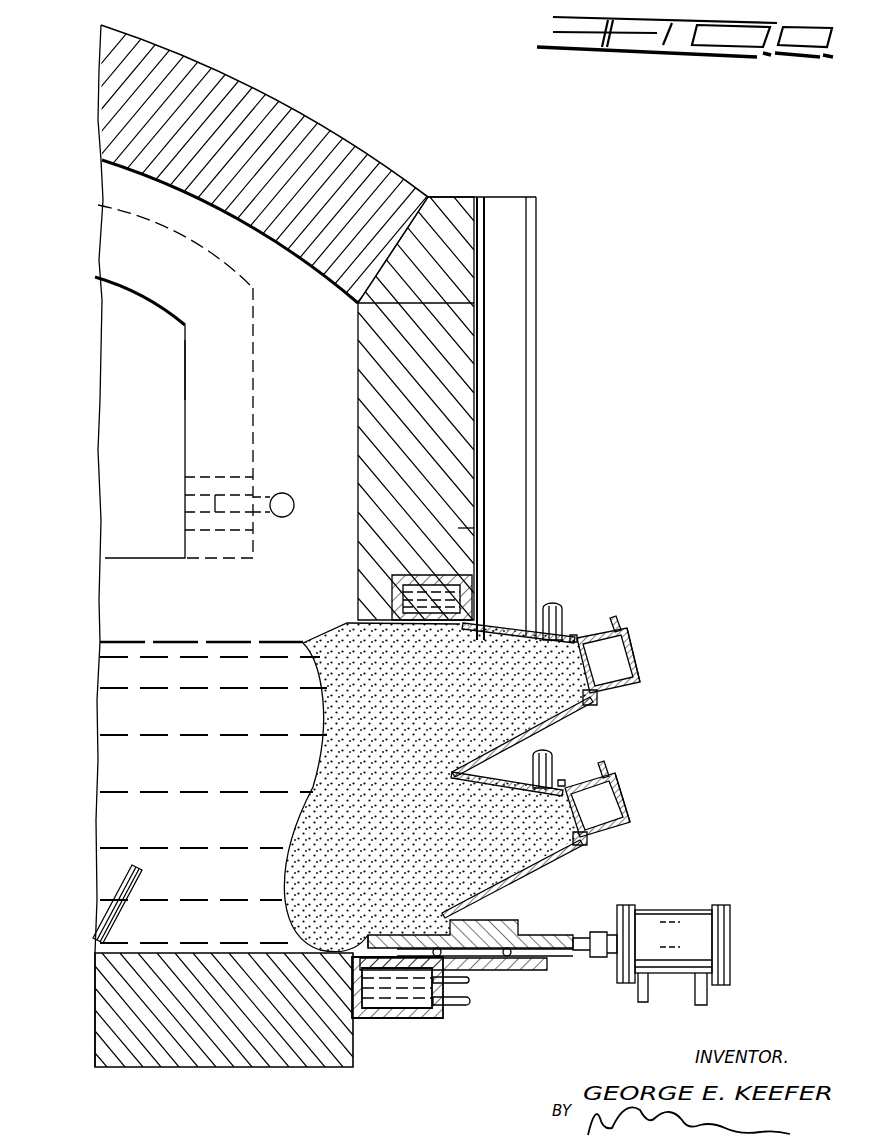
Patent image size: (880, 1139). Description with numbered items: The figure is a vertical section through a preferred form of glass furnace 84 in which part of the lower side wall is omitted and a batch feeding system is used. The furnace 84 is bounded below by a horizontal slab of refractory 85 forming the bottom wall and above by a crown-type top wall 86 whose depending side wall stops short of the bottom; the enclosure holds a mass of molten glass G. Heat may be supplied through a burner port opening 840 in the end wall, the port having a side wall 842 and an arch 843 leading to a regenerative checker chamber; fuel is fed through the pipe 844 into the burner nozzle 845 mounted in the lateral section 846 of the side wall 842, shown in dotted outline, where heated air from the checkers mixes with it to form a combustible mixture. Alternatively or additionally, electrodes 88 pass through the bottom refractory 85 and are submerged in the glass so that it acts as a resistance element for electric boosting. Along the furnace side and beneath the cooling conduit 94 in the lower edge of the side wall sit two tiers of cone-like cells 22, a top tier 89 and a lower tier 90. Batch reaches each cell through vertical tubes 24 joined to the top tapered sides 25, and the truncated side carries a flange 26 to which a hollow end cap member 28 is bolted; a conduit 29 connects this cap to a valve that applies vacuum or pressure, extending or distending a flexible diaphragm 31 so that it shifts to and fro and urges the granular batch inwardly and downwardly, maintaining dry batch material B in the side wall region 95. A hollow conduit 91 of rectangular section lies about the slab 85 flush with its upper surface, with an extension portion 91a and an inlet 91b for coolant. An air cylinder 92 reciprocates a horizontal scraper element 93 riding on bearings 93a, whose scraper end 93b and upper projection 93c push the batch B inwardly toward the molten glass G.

The crown-type top wall 86 is at (336, 141).
The furnace 84 is at (488, 178).
The burner port opening 840 is at (122, 358).
The arch 843 is at (117, 232).
The side wall 842 is at (205, 393).
The lateral section 846 is at (195, 500).
The pipe 844 is at (285, 495).
The burner nozzle 845 is at (255, 512).
The cooling conduit 94 is at (468, 597).
The top tapered sides 25 is at (497, 626).
The vertical tubes 24 is at (556, 612).
The hollow end cap member 28 is at (640, 652).
The conduit 29 is at (620, 622).
The flexible diaphragm 31 is at (643, 672).
The flange 26 is at (598, 700).
The cells 22 is at (549, 737).
The top tier 89 is at (607, 673).
The lower tier 90 is at (594, 825).
The molten glass G is at (105, 708).
The granular batch material B is at (350, 708).
The side wall region 95 is at (315, 760).
The electrodes 88 is at (125, 882).
The scraper element 93 is at (492, 973).
The upper projection 93c is at (487, 920).
The scraper end 93b is at (385, 952).
The bearings 93a is at (507, 956).
The air cylinder 92 is at (700, 935).
The hollow conduit 91 is at (481, 1014).
The extension portion 91a is at (540, 965).
The inlet 91b is at (470, 1003).
The horizontal slab of refractory 85 is at (295, 1058).